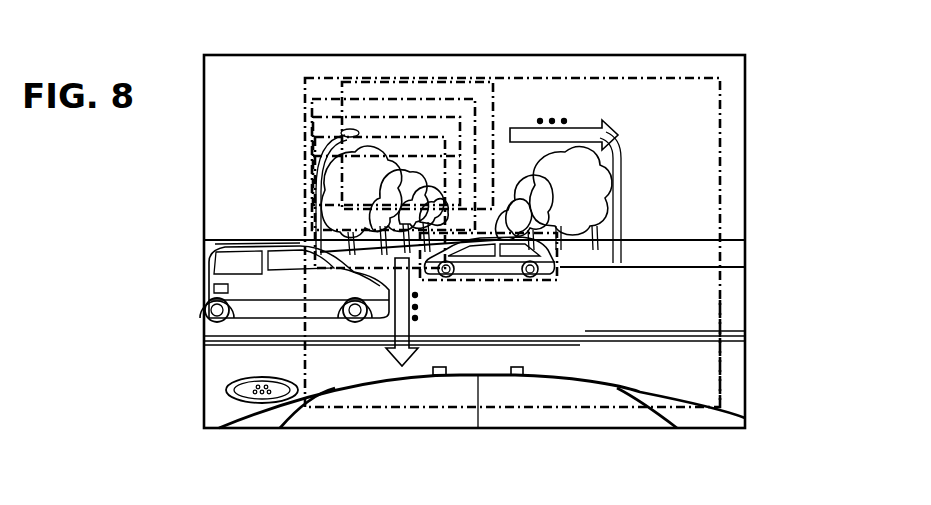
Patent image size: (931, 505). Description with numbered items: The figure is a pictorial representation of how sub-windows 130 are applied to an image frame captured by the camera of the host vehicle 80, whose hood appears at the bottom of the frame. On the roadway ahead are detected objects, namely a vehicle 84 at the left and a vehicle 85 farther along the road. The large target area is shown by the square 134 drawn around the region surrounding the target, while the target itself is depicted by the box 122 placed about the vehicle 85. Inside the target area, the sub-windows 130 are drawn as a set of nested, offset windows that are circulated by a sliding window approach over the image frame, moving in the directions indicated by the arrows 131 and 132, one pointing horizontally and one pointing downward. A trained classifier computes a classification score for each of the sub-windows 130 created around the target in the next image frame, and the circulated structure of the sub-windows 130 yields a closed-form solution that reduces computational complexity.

The vehicle 80 is at (705, 417).
The vehicle 84 is at (210, 283).
The vehicle 85 is at (545, 255).
The sample window 122 is at (565, 268).
The sub-windows 130 is at (385, 92).
The arrow 131 is at (580, 133).
The arrow 132 is at (400, 333).
The square 134 is at (670, 78).